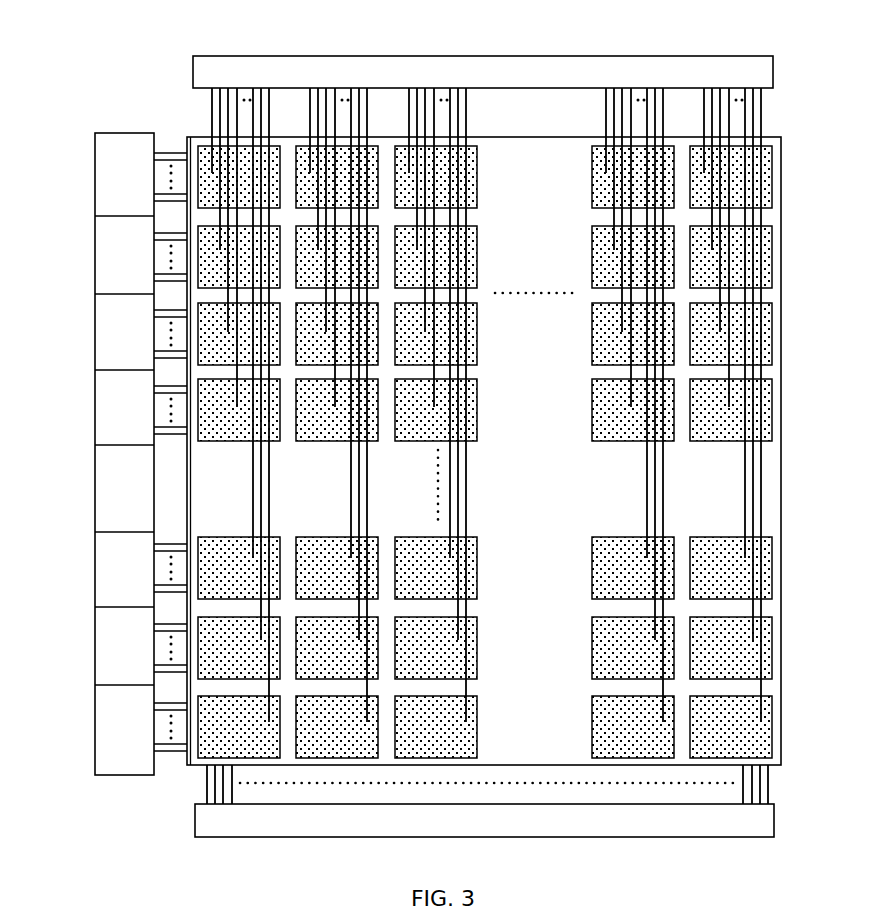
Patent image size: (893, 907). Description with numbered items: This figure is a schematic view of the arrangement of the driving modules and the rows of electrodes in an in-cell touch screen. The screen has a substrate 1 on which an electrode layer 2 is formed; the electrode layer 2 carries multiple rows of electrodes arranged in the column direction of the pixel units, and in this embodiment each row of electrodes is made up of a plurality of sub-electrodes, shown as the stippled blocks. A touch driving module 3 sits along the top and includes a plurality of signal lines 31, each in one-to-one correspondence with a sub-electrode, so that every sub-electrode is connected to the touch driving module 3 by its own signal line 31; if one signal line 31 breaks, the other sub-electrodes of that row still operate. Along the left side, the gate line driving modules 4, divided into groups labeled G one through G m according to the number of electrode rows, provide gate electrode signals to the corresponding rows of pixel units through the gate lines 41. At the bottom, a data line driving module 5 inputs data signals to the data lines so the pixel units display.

The substrate 1 is at (782, 492).
The electrode layer 2 is at (768, 415).
The touch driving module 3 is at (773, 74).
The signal lines 31 is at (762, 124).
The gate line driving modules 4 is at (100, 483).
The gate lines 41 is at (172, 153).
The data line driving module 5 is at (775, 820).